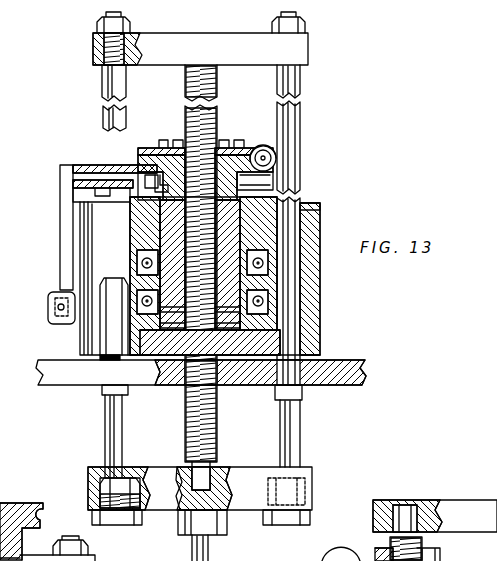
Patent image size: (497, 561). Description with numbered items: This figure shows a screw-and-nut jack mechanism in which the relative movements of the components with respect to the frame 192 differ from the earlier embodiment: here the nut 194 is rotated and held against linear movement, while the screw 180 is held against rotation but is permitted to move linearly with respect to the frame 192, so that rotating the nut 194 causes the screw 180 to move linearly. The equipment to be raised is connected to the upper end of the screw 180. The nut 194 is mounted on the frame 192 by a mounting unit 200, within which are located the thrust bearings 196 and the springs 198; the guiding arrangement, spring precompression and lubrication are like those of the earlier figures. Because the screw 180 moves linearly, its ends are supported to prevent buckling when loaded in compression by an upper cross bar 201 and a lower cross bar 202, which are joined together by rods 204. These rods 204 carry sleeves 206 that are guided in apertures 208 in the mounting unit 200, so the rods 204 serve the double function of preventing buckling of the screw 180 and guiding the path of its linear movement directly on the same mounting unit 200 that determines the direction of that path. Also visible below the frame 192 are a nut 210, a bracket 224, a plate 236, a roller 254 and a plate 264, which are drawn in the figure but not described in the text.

The lead screw 180 is at (218, 88).
The base plate 192 is at (345, 382).
The nut 194 is at (243, 150).
The bearings 196 is at (250, 268).
The sleeve 198 is at (250, 245).
The housing 200 is at (322, 310).
The top plate 201 is at (305, 46).
The lower plate 202 is at (250, 470).
The tie rods 204 is at (108, 425).
The guide rod 206 is at (300, 176).
The bearing cap 208 is at (320, 205).
The nut 210 is at (30, 547).
The bracket 224 is at (30, 503).
The plate 236 is at (96, 559).
The roller 254 is at (335, 546).
The plate 264 is at (450, 555).